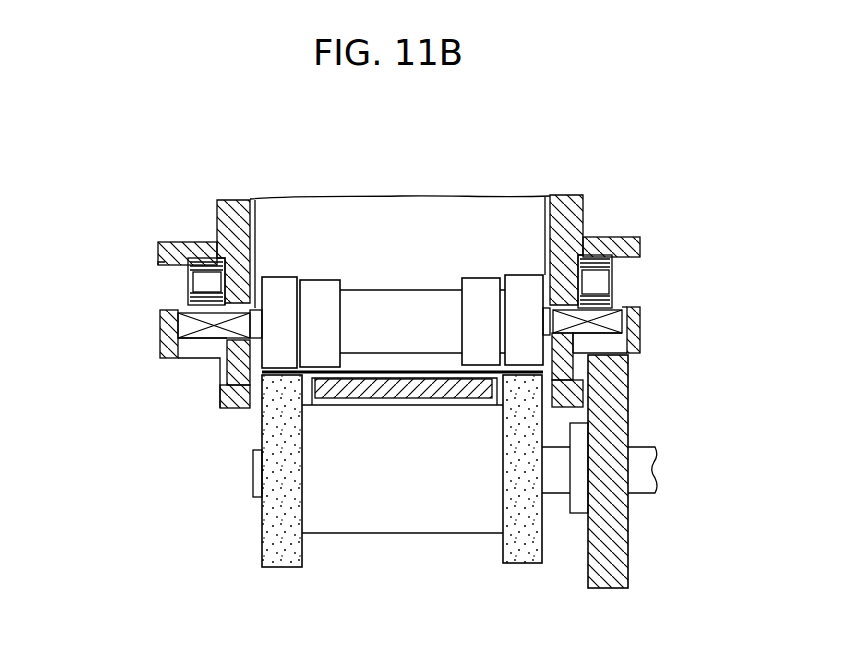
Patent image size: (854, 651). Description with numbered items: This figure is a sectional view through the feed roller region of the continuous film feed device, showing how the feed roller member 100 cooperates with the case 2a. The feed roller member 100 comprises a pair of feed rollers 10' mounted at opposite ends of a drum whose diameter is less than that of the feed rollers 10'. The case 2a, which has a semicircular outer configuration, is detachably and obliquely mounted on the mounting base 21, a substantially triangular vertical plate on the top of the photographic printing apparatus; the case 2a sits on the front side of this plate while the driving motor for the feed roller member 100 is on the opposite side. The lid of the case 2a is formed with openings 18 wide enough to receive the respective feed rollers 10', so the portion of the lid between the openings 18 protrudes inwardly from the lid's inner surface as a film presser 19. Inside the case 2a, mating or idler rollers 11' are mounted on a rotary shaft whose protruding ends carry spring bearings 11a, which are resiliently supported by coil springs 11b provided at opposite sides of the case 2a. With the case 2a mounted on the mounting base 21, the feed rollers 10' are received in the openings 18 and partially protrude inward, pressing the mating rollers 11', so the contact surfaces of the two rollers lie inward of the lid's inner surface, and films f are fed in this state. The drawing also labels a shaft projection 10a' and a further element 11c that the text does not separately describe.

The feed roller member 100 is at (150, 507).
The case 2a is at (218, 210).
The openings 18 is at (252, 393).
The coil springs 11b is at (190, 282).
The spring bearings 11a is at (162, 325).
The mating rollers 11' is at (273, 253).
The rotor yoke 11c is at (318, 283).
The films f is at (440, 376).
The film presser 19 is at (392, 376).
The feed rollers 10' is at (371, 497).
The shaft projection 10a' is at (211, 489).
The mounting base 21 is at (610, 553).